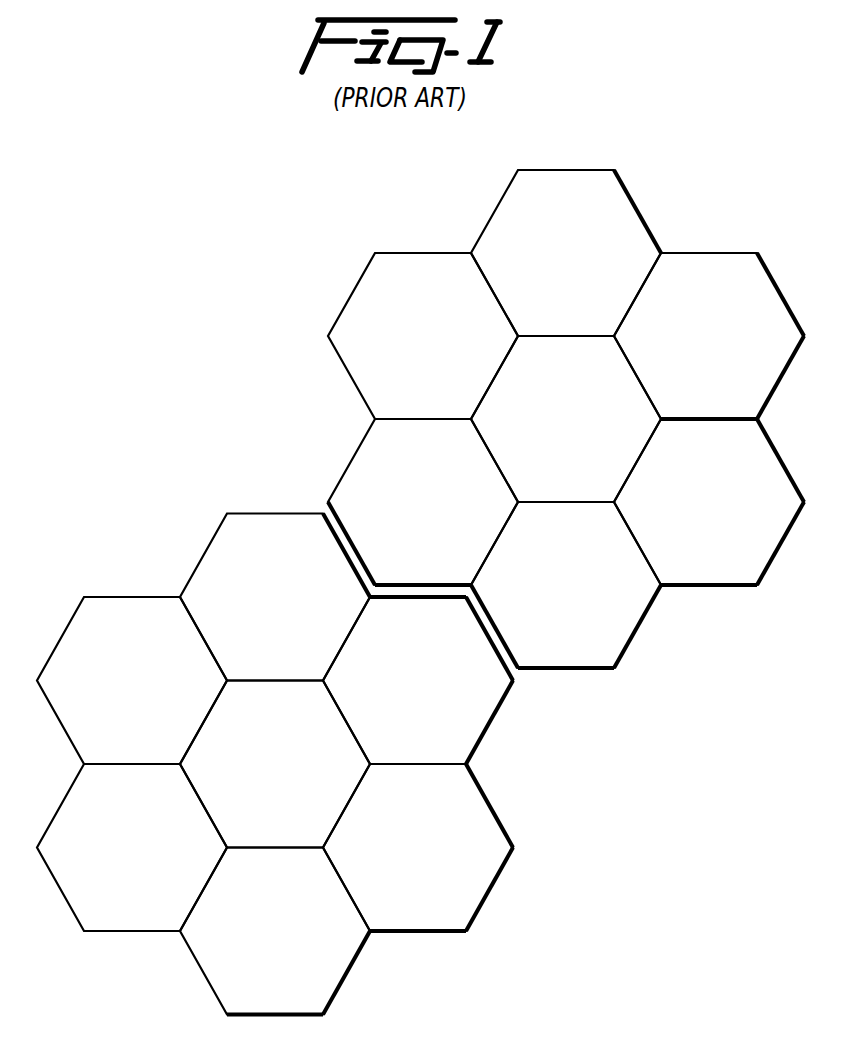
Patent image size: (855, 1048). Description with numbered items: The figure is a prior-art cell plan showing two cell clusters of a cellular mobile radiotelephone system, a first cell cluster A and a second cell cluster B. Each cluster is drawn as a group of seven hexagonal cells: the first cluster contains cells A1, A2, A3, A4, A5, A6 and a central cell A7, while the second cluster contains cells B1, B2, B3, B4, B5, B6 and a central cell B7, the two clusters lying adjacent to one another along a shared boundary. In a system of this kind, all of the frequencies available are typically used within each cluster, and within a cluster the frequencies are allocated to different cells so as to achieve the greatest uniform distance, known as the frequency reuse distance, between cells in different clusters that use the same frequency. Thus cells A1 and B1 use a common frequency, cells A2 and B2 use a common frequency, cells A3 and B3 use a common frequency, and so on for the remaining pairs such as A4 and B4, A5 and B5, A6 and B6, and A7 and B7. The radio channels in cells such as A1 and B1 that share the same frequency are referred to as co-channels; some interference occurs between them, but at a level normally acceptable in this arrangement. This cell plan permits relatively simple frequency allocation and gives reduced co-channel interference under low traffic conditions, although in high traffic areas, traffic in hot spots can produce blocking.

The cell A1 is at (418, 680).
The cell A2 is at (418, 847).
The cell A3 is at (275, 931).
The cell A4 is at (132, 847).
The cell A5 is at (132, 680).
The cell A6 is at (275, 597).
The cell A7 is at (275, 764).
The cell B1 is at (709, 336).
The cell B2 is at (709, 502).
The cell B3 is at (566, 585).
The cell B4 is at (423, 502).
The cell B5 is at (423, 336).
The cell B6 is at (566, 253).
The cell B7 is at (566, 419).